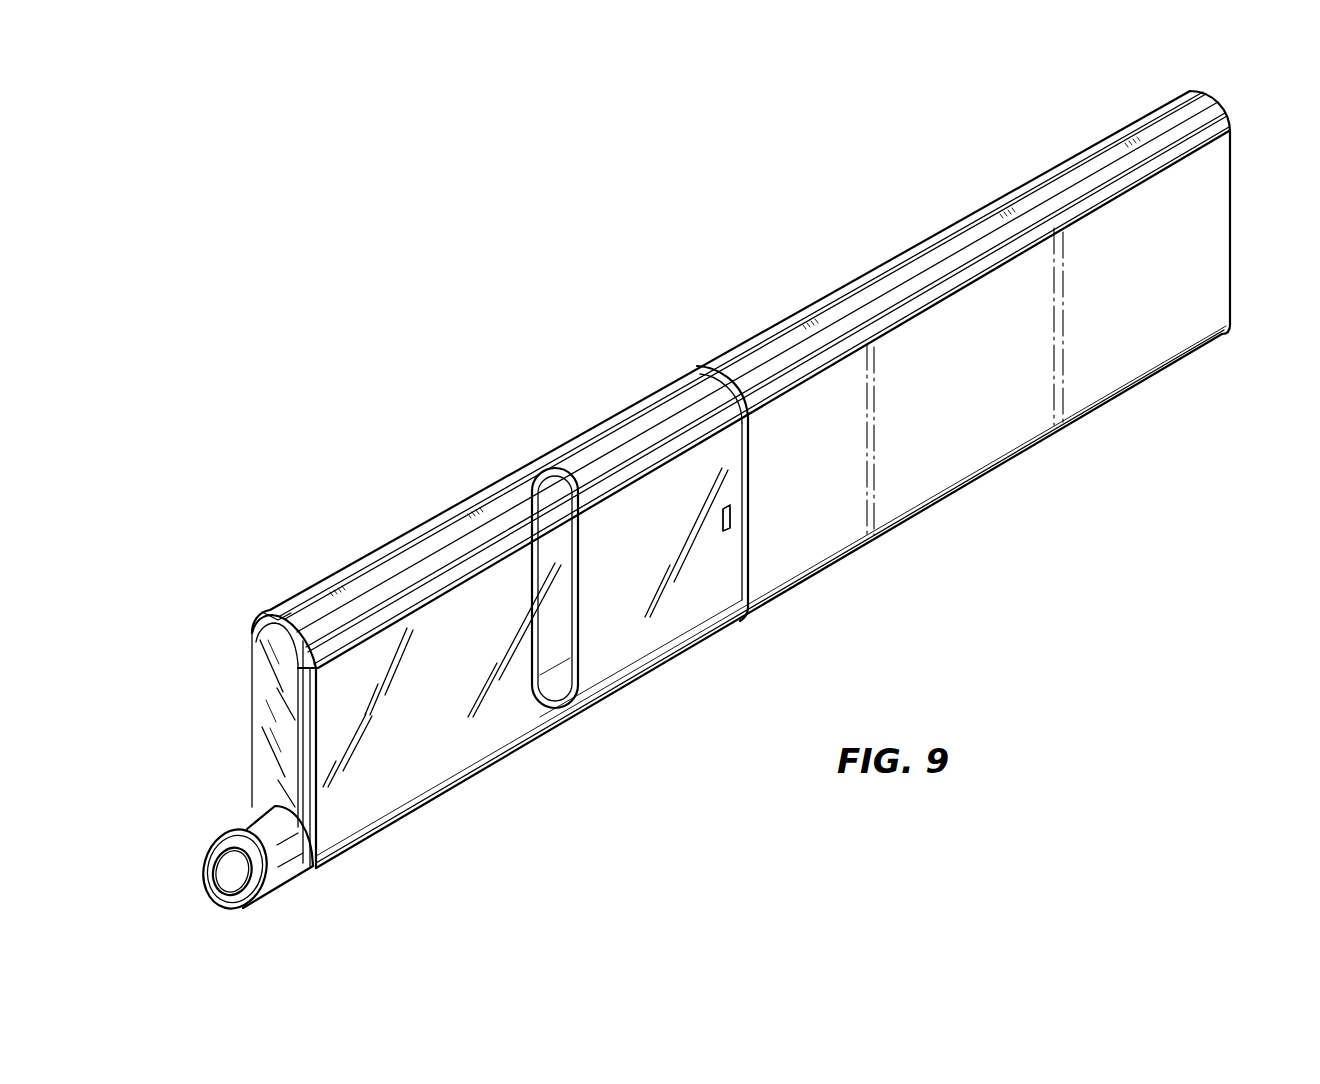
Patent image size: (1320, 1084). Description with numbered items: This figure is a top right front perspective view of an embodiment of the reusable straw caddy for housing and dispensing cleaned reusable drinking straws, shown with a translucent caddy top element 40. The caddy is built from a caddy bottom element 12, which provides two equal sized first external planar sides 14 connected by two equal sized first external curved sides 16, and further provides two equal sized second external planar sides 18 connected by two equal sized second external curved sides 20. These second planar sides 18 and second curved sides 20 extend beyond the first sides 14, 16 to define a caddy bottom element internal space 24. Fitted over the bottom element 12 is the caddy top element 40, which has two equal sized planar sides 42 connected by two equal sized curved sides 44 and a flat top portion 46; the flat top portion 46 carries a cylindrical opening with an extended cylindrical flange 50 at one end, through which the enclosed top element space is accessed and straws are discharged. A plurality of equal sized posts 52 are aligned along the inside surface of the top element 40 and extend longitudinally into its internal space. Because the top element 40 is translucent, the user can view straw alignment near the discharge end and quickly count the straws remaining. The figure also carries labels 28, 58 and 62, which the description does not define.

The caddy bottom element 12 is at (1152, 390).
The first external planar sides 14 is at (1175, 321).
The first external curved sides 16 is at (1057, 181).
The second external planar sides 18 is at (648, 643).
The second external curved sides 20 is at (680, 405).
The caddy bottom element internal space 24 is at (551, 690).
The tab 28 is at (736, 515).
The detent 58 is at (726, 518).
The caddy top element 40 is at (458, 496).
The planar sides 42 is at (410, 813).
The curved sides 44 is at (562, 448).
The flat top portion 46 is at (266, 700).
The extended cylindrical flange 50 is at (253, 823).
The posts 52 is at (288, 618).
The front surface 62 is at (378, 722).